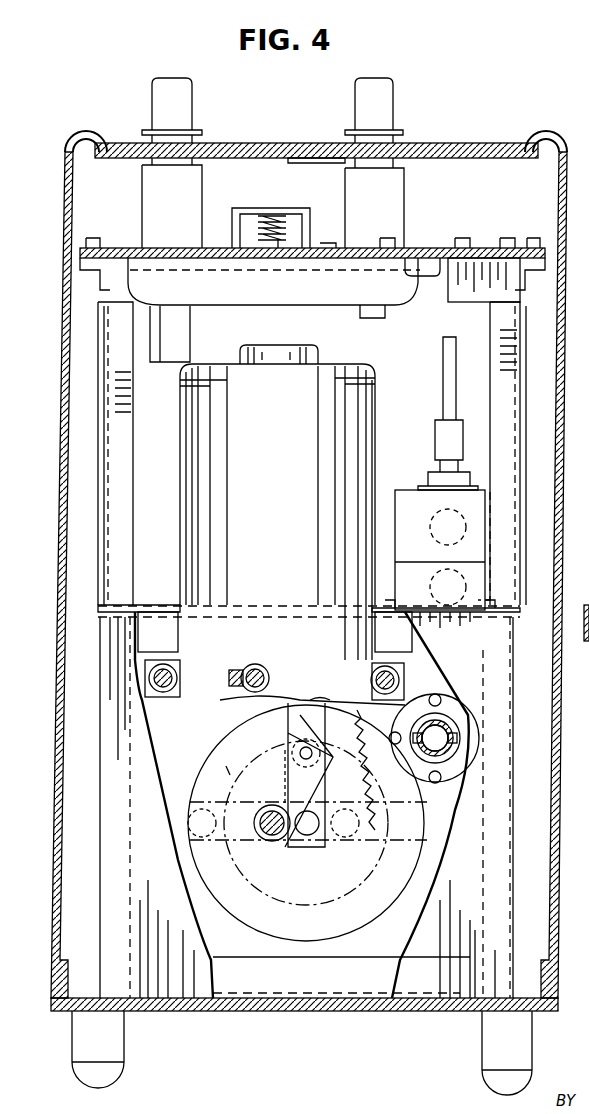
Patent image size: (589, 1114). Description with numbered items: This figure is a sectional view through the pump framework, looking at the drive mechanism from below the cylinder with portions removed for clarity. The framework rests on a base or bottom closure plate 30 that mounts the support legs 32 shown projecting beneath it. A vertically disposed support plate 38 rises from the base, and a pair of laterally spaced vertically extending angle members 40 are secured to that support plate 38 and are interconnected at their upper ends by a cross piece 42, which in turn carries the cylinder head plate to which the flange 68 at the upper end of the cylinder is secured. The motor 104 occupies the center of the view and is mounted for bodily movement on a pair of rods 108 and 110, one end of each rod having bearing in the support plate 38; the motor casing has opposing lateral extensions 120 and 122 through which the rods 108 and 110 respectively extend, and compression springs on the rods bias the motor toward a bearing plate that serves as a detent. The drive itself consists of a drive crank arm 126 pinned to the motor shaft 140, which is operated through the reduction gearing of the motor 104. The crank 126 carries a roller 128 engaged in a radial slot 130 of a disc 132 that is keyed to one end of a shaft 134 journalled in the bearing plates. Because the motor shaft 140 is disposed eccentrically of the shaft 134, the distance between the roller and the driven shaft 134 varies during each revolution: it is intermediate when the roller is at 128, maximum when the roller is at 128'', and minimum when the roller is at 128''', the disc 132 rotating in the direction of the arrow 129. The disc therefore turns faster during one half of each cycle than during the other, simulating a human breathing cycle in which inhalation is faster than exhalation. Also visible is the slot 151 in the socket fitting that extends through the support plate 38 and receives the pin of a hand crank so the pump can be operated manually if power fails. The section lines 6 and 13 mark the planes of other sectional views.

The section line 6 is at (87, 188).
The section line 13 is at (108, 345).
The base or bottom closure plate 30 is at (289, 1008).
The support legs 32 is at (121, 1050).
The support plate 38 is at (92, 877).
The angle members 40 is at (128, 431).
The angle member or cross piece 42 is at (463, 292).
The flange 68 is at (117, 262).
The motor 104 is at (283, 480).
The rod 108 is at (400, 673).
The rod 110 is at (170, 672).
The lateral extension 120 is at (165, 703).
The lateral extension 122 is at (388, 660).
The drive crank arm 126 is at (273, 768).
The roller 128 is at (332, 688).
The roller position 128'' is at (184, 806).
The roller position 128''' is at (356, 790).
The arrow 129 is at (229, 760).
The radial slot 130 is at (305, 700).
The disc 132 is at (372, 904).
The shaft 134 is at (311, 832).
The motor shaft 140 is at (281, 843).
The slot 151 is at (405, 720).